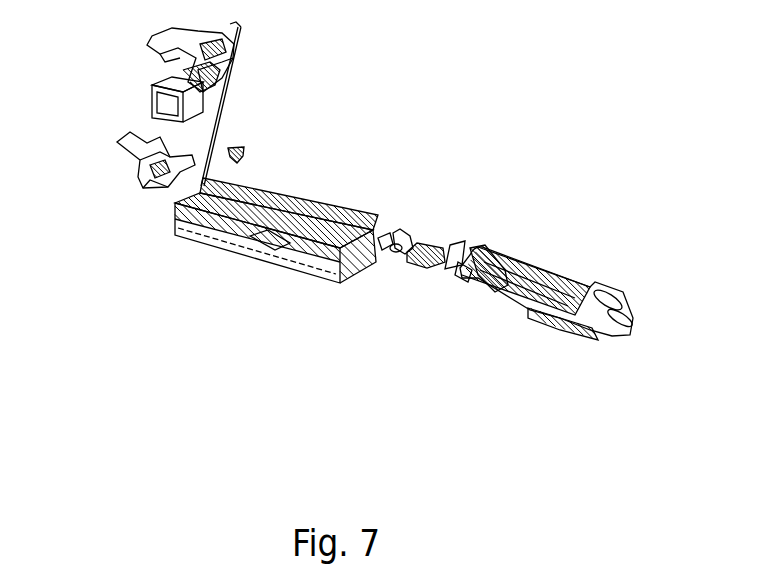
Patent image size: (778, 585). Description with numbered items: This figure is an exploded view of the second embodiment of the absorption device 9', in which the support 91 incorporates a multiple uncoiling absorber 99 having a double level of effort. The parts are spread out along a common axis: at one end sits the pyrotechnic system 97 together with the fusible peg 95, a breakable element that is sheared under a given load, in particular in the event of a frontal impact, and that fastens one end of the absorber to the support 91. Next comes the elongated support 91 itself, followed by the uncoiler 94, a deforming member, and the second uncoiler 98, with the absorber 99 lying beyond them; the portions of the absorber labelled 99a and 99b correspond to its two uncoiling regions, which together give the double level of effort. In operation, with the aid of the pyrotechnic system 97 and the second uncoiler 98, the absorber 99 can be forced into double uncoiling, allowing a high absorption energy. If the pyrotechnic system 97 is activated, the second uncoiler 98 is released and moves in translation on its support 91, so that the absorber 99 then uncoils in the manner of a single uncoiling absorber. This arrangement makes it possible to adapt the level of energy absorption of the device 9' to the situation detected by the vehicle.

The absorption device 9' is at (103, 334).
The support 91 is at (325, 216).
The uncoiler 94 is at (398, 230).
The fusible peg 95 is at (248, 152).
The pyrotechnic system 97 is at (225, 108).
The second uncoiler 98 is at (470, 250).
The multiple uncoiling absorber 99 is at (548, 262).
The contact element front section 99a is at (455, 268).
The contact element rear section 99b is at (590, 330).